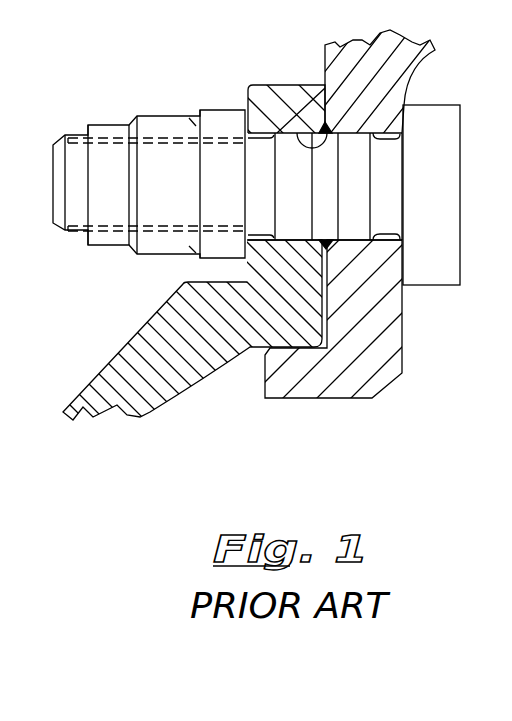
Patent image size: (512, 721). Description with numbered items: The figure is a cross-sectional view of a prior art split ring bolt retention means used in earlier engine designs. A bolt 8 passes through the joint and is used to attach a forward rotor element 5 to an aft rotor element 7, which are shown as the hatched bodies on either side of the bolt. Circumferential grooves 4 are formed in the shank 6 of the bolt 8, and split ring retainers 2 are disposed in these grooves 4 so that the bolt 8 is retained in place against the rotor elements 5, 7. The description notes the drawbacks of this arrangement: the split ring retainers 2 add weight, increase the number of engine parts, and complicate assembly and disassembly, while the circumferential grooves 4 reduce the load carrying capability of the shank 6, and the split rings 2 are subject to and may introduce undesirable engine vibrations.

The split ring retainer 2 is at (323, 122).
The circumferential groove 4 is at (340, 252).
The forward rotor element 5 is at (186, 392).
The shank 6 is at (357, 134).
The aft rotor element 7 is at (372, 398).
The bolt 8 is at (368, 242).